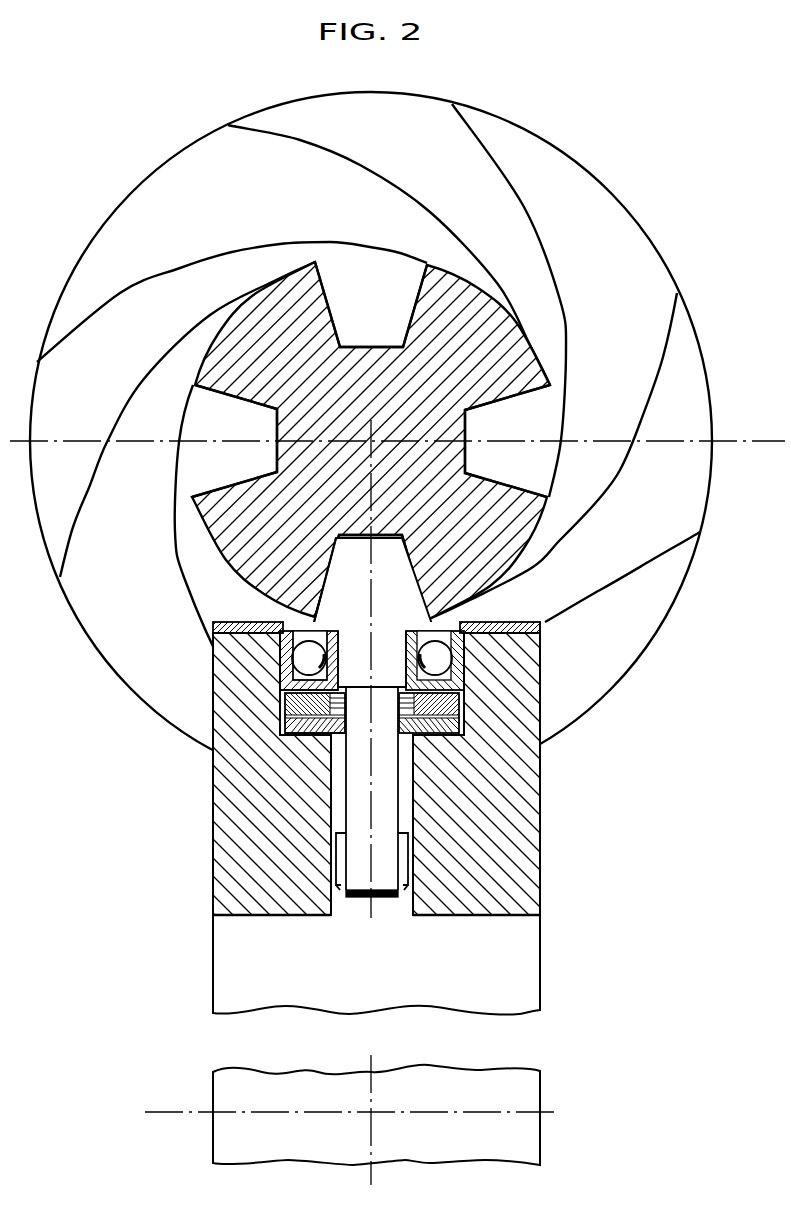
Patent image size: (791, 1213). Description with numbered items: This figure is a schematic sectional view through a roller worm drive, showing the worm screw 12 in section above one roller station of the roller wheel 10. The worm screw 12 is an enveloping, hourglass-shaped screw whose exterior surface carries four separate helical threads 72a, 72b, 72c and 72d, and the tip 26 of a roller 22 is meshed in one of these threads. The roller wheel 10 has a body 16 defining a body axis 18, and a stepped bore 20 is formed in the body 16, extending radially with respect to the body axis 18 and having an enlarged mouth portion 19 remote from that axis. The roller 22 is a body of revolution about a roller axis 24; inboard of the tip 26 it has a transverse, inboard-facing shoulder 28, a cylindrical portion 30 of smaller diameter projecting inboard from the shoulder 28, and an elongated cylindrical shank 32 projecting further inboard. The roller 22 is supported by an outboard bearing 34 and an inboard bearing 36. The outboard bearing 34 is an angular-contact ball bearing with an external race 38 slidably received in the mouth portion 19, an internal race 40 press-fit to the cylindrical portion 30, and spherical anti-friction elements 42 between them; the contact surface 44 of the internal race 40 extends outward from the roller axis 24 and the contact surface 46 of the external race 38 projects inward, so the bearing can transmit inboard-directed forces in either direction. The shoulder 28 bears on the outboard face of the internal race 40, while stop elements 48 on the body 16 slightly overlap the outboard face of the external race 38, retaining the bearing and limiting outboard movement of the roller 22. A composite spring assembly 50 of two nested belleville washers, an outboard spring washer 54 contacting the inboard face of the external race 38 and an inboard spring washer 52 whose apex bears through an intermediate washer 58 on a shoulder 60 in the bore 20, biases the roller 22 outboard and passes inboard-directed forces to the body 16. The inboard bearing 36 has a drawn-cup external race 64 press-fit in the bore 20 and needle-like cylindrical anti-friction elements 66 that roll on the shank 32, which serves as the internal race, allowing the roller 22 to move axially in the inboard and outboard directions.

The roller wheel 10 is at (547, 841).
The worm screw 12 is at (609, 189).
The body 16 is at (541, 784).
The body axis 18 is at (558, 1112).
The enlarged mouth portion 19 is at (541, 646).
The stepped bore 20 is at (424, 803).
The roller 22 is at (388, 770).
The roller axis 24 is at (373, 552).
The tip 26 is at (398, 535).
The shoulder 28 is at (328, 594).
The cylindrical portion 30 is at (387, 631).
The cylindrical shank 32 is at (353, 817).
The outboard bearing 34 is at (282, 648).
The inboard bearing 36 is at (331, 855).
The external race 38 is at (270, 669).
The internal race 40 is at (352, 635).
The spherical anti-friction elements 42 is at (292, 658).
The contact surface of internal race 44 is at (290, 623).
The contact surface of external race 46 is at (280, 692).
The stop elements 48 is at (213, 627).
The composite spring assembly 50 is at (466, 692).
The inboard spring washer 52 is at (300, 733).
The outboard spring washer 54 is at (300, 731).
The intermediate washer 58 is at (320, 734).
The shoulder 60 is at (446, 734).
The external race 64 is at (341, 886).
The cylindrical anti-friction elements 66 is at (340, 893).
The helical thread 72a is at (372, 290).
The helical thread 72b is at (200, 456).
The helical thread 72c is at (323, 577).
The helical thread 72d is at (513, 416).